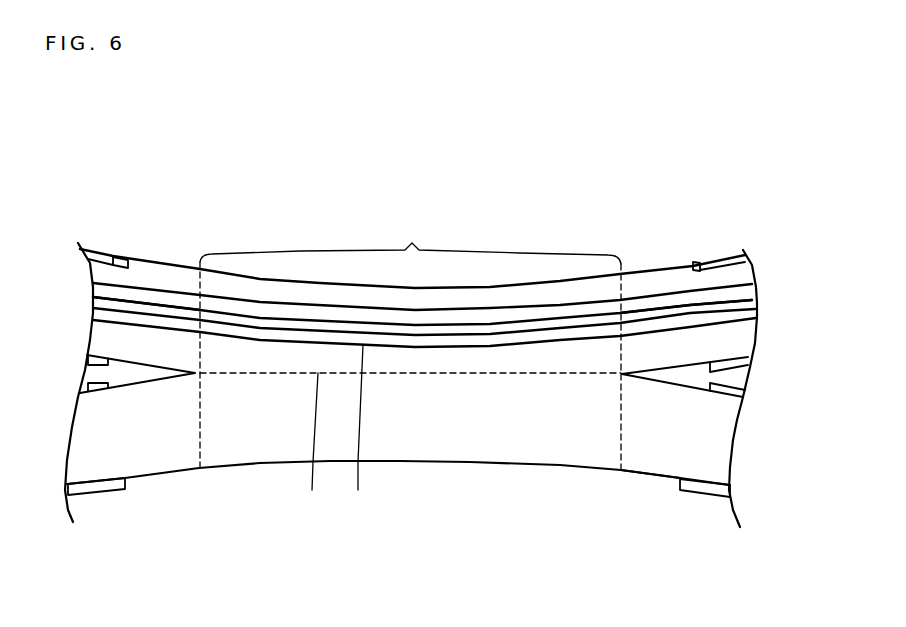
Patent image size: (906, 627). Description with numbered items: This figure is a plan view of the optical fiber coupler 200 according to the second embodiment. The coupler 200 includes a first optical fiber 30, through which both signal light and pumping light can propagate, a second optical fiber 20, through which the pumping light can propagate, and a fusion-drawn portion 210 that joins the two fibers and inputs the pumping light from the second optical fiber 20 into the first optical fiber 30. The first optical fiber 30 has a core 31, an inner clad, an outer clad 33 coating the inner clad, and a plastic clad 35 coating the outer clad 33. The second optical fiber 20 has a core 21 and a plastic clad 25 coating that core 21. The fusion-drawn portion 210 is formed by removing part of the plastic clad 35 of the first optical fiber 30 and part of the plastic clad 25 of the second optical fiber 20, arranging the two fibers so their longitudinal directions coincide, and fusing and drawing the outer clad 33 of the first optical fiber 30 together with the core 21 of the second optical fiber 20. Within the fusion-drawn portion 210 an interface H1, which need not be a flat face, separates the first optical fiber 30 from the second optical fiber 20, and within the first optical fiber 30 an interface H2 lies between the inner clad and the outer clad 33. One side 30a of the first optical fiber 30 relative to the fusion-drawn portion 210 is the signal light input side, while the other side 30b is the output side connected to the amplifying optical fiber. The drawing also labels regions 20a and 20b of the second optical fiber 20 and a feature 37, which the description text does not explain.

The optical fiber coupler 200 is at (561, 137).
The fusion-drawn portion 210 is at (410, 239).
The second optical fiber 20 is at (146, 490).
The first end portion of lower member 20a is at (189, 423).
The second end portion of lower member 20b is at (644, 438).
The core 21 is at (673, 438).
The plastic clad 25 is at (85, 392).
The first optical fiber 30 is at (176, 257).
The one side of the first optical fiber 30a is at (183, 300).
The other side of the first optical fiber 30b is at (662, 247).
The core 31 is at (700, 316).
The outer clad 33 is at (670, 287).
The plastic clad 35 is at (115, 260).
The tapered portion 37 is at (740, 317).
The interface H1 is at (312, 490).
The interface H2 is at (358, 490).